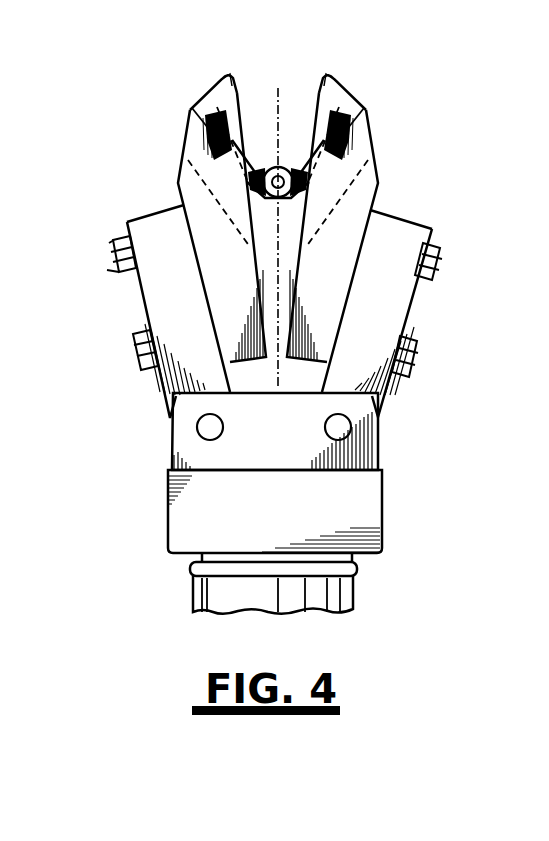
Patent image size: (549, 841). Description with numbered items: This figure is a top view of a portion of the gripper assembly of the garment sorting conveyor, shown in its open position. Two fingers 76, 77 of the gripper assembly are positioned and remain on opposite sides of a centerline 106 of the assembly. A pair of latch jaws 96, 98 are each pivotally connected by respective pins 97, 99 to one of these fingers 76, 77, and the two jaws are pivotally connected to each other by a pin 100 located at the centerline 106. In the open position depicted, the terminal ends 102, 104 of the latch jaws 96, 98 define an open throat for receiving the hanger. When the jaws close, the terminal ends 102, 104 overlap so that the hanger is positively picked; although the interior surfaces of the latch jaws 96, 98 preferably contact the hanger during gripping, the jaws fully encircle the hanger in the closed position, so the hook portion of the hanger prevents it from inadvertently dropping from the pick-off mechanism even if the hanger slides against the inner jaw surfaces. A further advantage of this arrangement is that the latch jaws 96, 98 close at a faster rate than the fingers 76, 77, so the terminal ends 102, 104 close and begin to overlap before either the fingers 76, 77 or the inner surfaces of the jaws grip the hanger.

The finger 76 is at (330, 288).
The finger 77 is at (210, 242).
The latch jaw 96 is at (192, 112).
The pin 97 is at (212, 144).
The latch jaw 98 is at (363, 112).
The pin 99 is at (345, 147).
The pin 100 is at (280, 167).
The terminal end 102 is at (228, 72).
The terminal end 104 is at (340, 76).
The centerline 106 is at (277, 380).